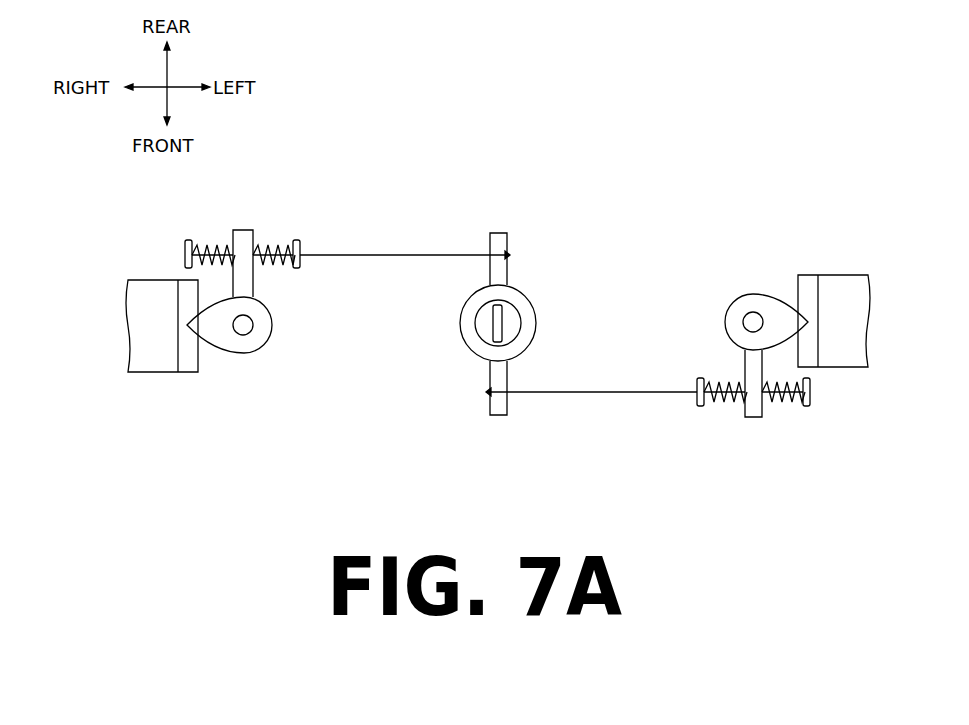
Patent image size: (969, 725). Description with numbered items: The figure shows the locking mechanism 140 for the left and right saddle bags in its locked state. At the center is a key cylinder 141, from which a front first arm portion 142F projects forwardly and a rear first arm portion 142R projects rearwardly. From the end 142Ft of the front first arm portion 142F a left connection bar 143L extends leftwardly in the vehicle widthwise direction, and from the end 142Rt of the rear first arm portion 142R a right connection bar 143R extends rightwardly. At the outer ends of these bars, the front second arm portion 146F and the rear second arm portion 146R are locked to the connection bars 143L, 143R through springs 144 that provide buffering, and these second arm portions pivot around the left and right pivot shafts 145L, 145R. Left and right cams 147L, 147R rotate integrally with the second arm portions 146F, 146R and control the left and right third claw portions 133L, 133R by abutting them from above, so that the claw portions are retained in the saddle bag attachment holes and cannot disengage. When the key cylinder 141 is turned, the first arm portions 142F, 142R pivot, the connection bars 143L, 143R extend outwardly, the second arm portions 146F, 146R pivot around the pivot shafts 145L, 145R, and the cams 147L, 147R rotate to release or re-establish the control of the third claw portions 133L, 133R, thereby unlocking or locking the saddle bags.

The locking mechanism 140 is at (728, 202).
The key cylinder 141 is at (470, 332).
The rear first arm portion 142R is at (494, 277).
The end of rear first arm portion 142Rt is at (498, 240).
The front first arm portion 142F is at (495, 380).
The end of front first arm portion 142Ft is at (498, 412).
The right connection bar 143R is at (364, 252).
The left connection bar 143L is at (608, 394).
The springs 144 is at (220, 243).
The right pivot shaft 145R is at (247, 337).
The left pivot shaft 145L is at (755, 312).
The rear second arm portion 146R is at (256, 278).
The front second arm portion 146F is at (745, 375).
The right cam 147R is at (258, 327).
The left cam 147L is at (735, 315).
The right third claw portion 133R is at (182, 364).
The left third claw portion 133L is at (810, 364).